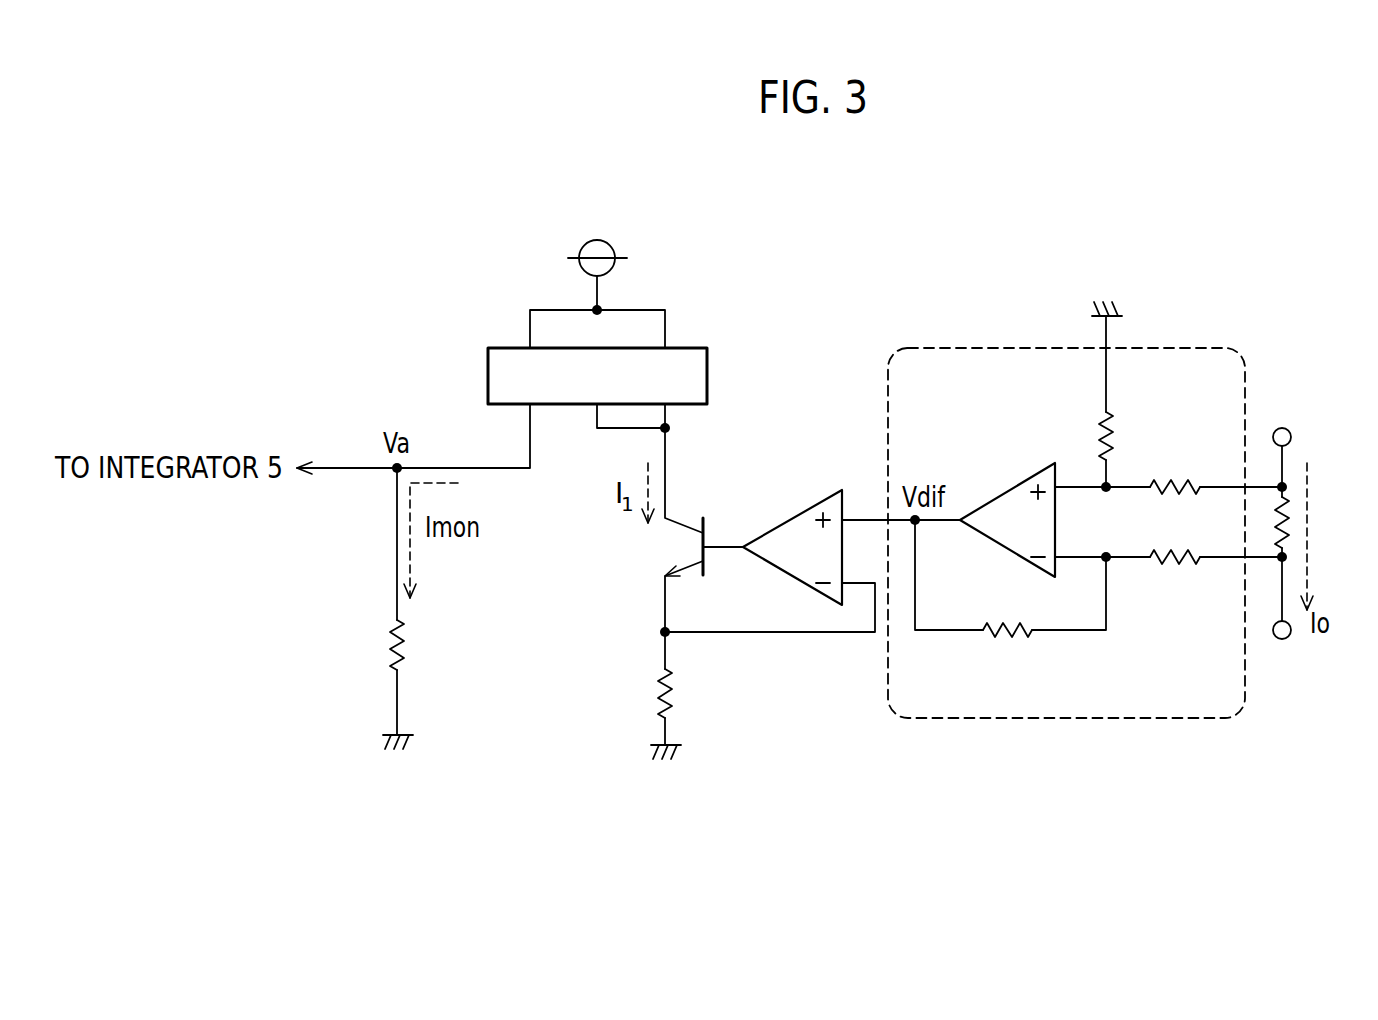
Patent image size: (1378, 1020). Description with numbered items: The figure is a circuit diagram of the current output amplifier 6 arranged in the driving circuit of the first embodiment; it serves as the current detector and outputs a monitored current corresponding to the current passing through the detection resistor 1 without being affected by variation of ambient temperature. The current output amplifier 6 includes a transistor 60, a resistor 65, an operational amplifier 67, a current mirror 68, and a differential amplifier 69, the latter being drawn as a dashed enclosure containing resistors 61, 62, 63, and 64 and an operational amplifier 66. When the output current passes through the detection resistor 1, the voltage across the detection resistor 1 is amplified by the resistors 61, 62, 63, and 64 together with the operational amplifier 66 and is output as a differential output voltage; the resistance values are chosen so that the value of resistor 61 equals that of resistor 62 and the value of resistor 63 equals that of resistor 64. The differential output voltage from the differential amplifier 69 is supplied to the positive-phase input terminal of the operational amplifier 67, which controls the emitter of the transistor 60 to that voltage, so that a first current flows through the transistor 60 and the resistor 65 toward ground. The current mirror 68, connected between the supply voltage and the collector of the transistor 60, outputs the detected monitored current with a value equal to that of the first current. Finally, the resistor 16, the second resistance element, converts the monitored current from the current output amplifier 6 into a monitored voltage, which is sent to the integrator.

The detection resistor 1 is at (1293, 525).
The current output amplifier 6 is at (952, 265).
The resistor 16 is at (408, 635).
The transistor 60 is at (680, 547).
The resistor 61 is at (1183, 480).
The resistor 62 is at (1178, 568).
The resistor 63 is at (1093, 433).
The resistor 64 is at (1008, 642).
The resistor 65 is at (678, 687).
The operational amplifier 66 is at (1003, 490).
The operational amplifier 67 is at (780, 520).
The current mirror 68 is at (488, 372).
The differential amplifier 69 is at (1060, 718).